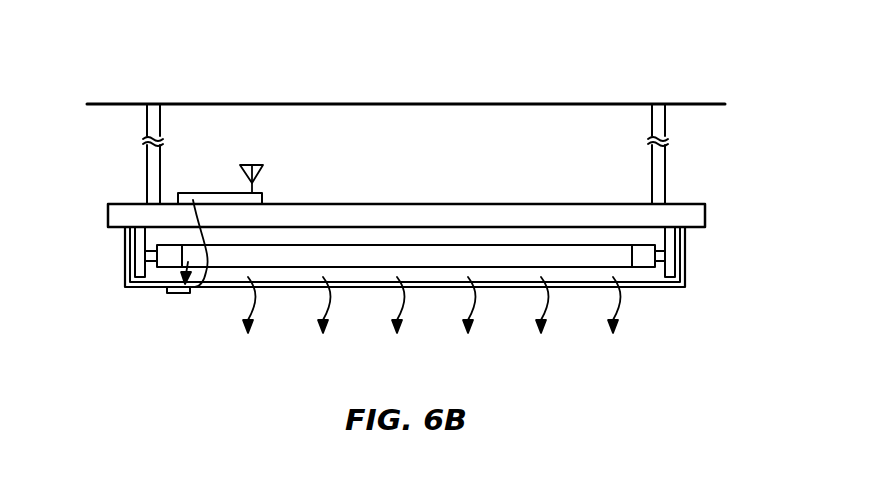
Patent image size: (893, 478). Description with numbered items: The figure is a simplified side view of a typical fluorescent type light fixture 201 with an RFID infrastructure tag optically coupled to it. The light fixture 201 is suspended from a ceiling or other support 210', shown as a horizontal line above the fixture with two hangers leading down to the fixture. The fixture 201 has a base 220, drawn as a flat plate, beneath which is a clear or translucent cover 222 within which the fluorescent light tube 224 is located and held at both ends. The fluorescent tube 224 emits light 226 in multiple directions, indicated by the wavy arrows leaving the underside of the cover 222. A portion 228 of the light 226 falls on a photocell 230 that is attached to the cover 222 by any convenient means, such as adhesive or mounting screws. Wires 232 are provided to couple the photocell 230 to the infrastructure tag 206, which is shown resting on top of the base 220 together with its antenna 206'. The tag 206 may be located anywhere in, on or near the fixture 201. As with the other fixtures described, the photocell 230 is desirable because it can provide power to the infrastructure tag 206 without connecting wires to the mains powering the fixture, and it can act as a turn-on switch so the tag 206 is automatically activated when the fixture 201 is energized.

The light fixture 201 is at (652, 387).
The infrastructure tag 206 is at (220, 167).
The antenna 206' is at (293, 169).
The ceiling or other support 210' is at (406, 154).
The base 220 is at (705, 208).
The cover 222 is at (685, 268).
The fluorescent light tube 224 is at (403, 252).
The light 226 is at (640, 318).
The portion of light 228 is at (185, 268).
The photocell 230 is at (178, 293).
The wires 232 is at (197, 232).